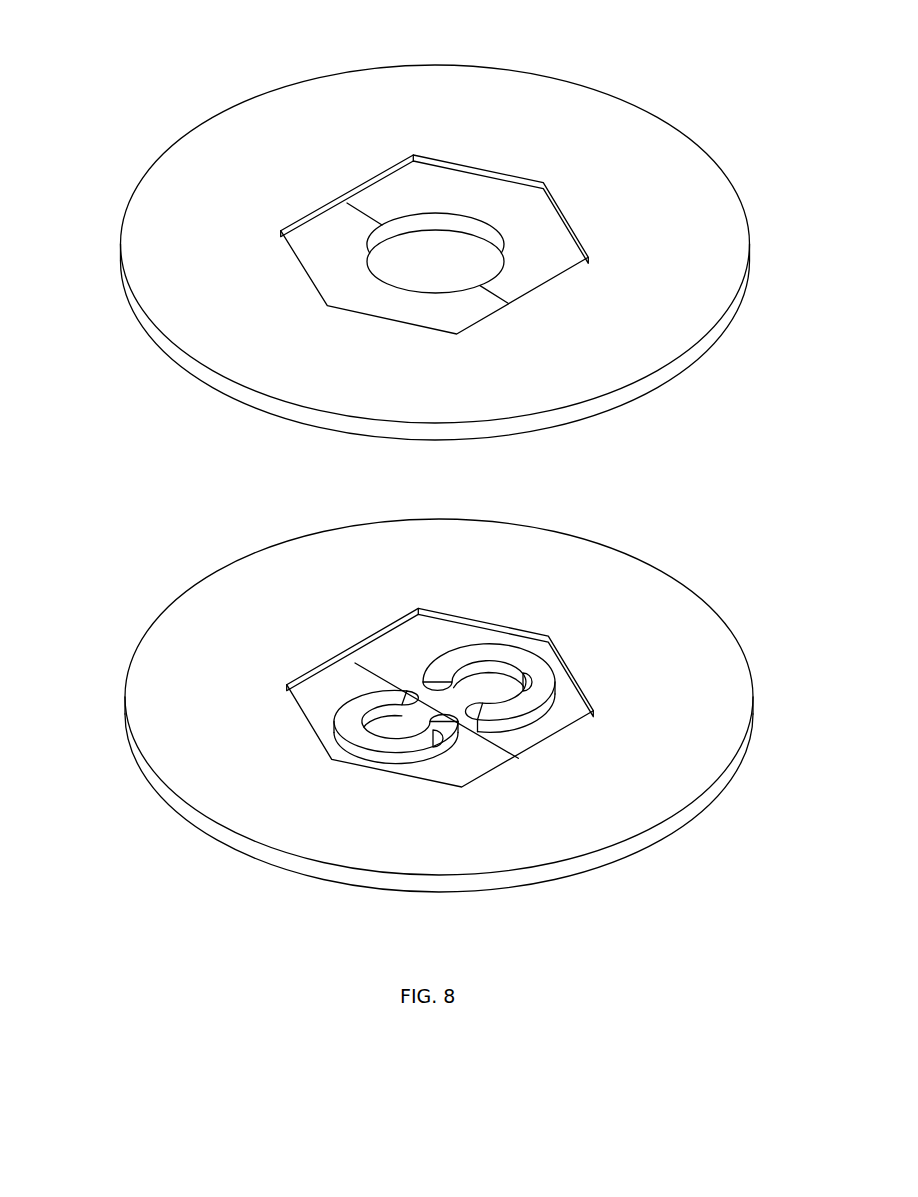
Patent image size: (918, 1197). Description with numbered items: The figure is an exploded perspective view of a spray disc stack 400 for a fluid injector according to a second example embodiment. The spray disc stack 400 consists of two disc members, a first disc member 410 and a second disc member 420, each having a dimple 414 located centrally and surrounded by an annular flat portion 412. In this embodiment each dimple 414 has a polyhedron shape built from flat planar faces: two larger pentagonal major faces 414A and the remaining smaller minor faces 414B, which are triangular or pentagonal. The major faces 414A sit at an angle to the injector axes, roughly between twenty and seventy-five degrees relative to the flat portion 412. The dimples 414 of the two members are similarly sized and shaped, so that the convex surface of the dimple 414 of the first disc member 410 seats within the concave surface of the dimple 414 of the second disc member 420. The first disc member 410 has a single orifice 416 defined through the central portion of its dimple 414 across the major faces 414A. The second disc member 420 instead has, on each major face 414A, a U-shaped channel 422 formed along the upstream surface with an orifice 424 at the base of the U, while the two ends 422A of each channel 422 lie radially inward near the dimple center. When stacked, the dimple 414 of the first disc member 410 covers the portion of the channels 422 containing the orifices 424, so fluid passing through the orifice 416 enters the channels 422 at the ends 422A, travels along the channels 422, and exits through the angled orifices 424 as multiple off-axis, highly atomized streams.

The spray disc stack 400 is at (119, 63).
The first disc member 410 is at (140, 188).
The annular flat portion 412 is at (690, 165).
The dimple 414 is at (553, 228).
The major face 414A is at (393, 187).
The minor face 414B is at (320, 193).
The orifice 416 is at (478, 260).
The second disc member 420 is at (155, 623).
The channel 422 is at (438, 752).
The end 422A is at (433, 657).
The orifice 424 is at (528, 683).